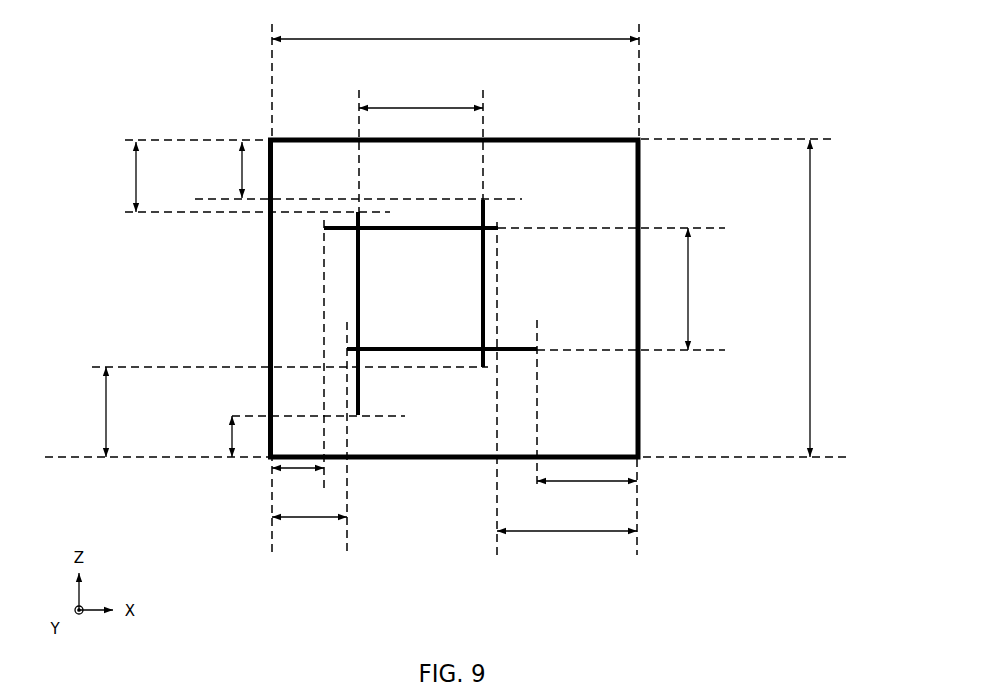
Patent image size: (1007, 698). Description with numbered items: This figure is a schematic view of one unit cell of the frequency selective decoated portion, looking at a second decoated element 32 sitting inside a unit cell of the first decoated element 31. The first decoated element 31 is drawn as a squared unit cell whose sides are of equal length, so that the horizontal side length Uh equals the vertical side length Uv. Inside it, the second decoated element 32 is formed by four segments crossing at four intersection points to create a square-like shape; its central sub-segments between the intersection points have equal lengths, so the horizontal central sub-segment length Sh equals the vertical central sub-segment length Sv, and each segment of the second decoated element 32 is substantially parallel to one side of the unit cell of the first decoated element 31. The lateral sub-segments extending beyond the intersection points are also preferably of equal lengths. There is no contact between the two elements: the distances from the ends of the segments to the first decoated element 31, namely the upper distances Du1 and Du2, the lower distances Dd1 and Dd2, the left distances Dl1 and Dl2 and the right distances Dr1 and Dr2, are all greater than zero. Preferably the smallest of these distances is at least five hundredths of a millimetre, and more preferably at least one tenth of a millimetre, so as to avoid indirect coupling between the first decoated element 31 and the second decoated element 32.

The first decoated element 31 is at (640, 178).
The second decoated element 32 is at (305, 275).
The horizontal unit cell side length Uh is at (430, 34).
The vertical unit cell side length Uv is at (823, 300).
The horizontal central sub-segment length Sh is at (421, 97).
The vertical central sub-segment length Sv is at (706, 289).
The first upper distance Du1 is at (115, 177).
The second upper distance Du2 is at (218, 170).
The first lower distance Dd1 is at (210, 436).
The second lower distance Dd2 is at (82, 412).
The first left distance Dl1 is at (298, 484).
The second left distance Dl2 is at (309, 531).
The first right distance Dr1 is at (567, 544).
The second right distance Dr2 is at (587, 496).